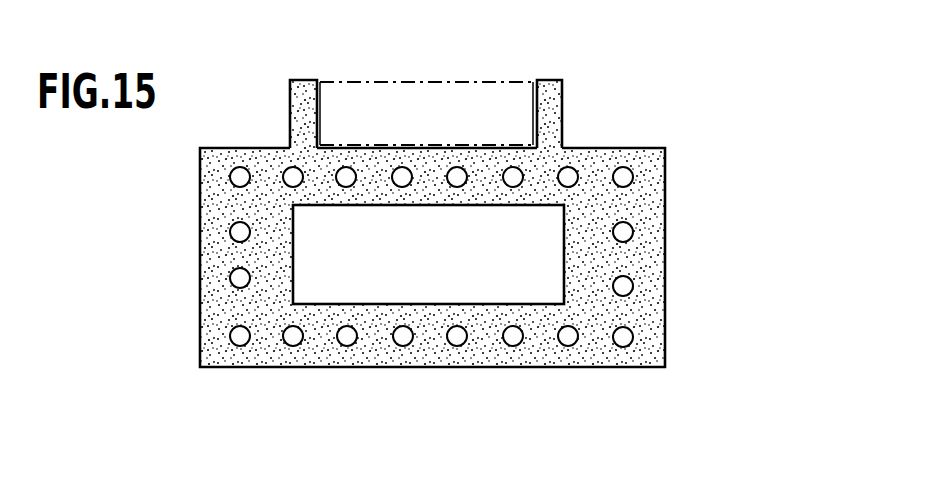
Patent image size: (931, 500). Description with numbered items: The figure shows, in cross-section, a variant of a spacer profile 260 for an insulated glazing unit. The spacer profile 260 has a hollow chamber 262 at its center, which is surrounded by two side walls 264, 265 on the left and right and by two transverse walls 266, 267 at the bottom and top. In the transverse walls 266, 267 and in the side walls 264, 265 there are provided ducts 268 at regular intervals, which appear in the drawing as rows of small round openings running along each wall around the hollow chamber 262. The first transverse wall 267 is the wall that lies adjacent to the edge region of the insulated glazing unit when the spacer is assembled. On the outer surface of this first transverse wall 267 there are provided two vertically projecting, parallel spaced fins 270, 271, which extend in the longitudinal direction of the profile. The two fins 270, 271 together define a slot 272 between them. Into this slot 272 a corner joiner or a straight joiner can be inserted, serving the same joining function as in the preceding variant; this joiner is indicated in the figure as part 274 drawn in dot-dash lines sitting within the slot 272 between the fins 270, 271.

The spacer profile 260 is at (689, 210).
The hollow chamber 262 is at (432, 270).
The side wall 264 is at (187, 249).
The side wall 265 is at (681, 273).
The transverse wall 266 is at (485, 380).
The first transverse wall 267 is at (621, 137).
The duct 268 is at (633, 340).
The fin 270 is at (290, 103).
The fin 271 is at (563, 103).
The slot 272 is at (533, 98).
The joiner 274 is at (445, 82).